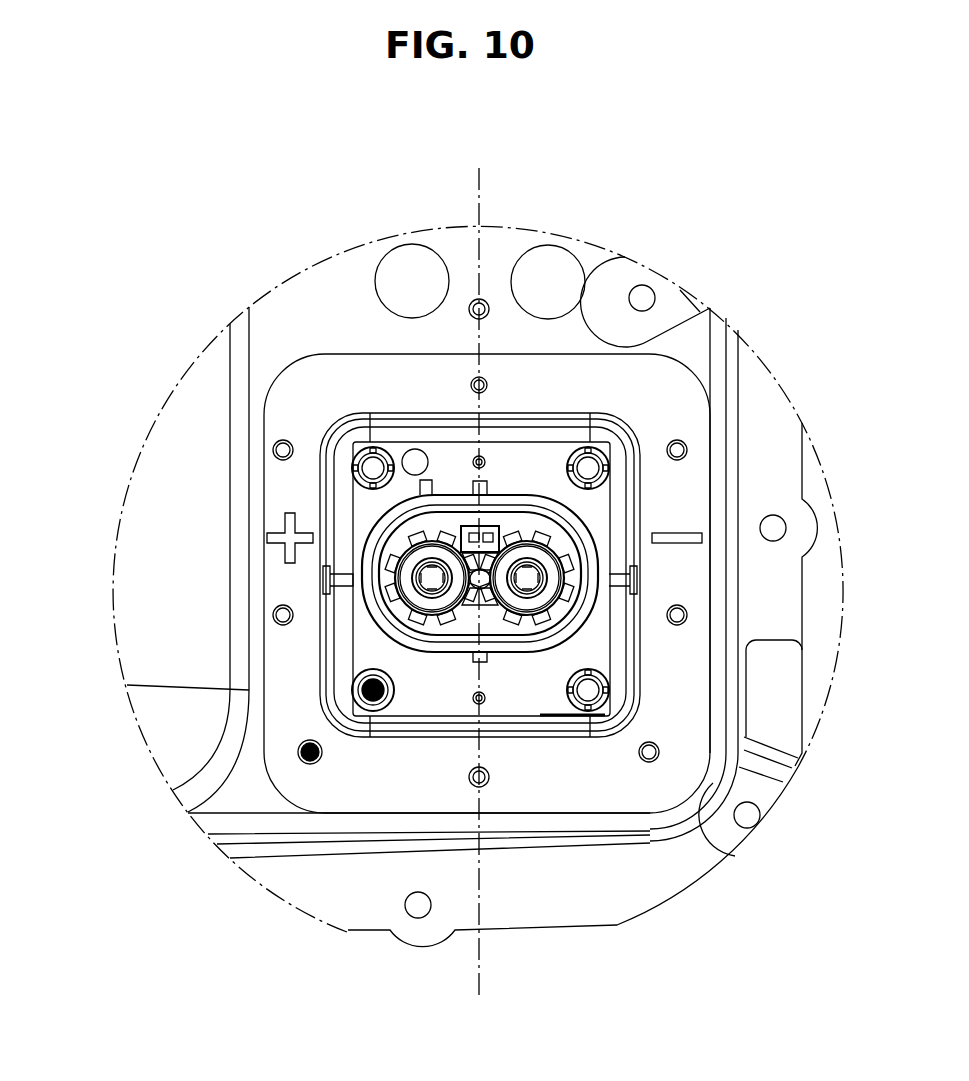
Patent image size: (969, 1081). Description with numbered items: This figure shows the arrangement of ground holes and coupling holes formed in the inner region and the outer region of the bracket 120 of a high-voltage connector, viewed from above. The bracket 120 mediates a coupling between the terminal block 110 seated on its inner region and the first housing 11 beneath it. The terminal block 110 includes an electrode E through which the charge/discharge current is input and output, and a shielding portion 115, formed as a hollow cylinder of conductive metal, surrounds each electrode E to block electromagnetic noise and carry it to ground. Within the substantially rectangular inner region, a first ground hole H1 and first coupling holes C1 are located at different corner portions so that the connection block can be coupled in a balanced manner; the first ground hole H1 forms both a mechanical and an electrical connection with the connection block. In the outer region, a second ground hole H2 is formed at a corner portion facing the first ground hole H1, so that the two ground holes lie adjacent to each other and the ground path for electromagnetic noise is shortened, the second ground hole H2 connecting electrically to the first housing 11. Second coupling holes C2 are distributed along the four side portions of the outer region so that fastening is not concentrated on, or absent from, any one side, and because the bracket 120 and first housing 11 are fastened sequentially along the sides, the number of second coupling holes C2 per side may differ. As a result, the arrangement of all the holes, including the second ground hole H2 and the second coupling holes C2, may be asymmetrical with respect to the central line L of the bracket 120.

The first housing 11 is at (780, 486).
The terminal block 110 is at (520, 473).
The shielding portion 115 is at (570, 563).
The bracket 120 is at (327, 353).
The first coupling hole C1 is at (353, 480).
The second coupling hole C2 is at (687, 450).
The first ground hole H1 is at (353, 690).
The second ground hole H2 is at (307, 757).
The electrode E is at (527, 582).
The central line L is at (479, 570).